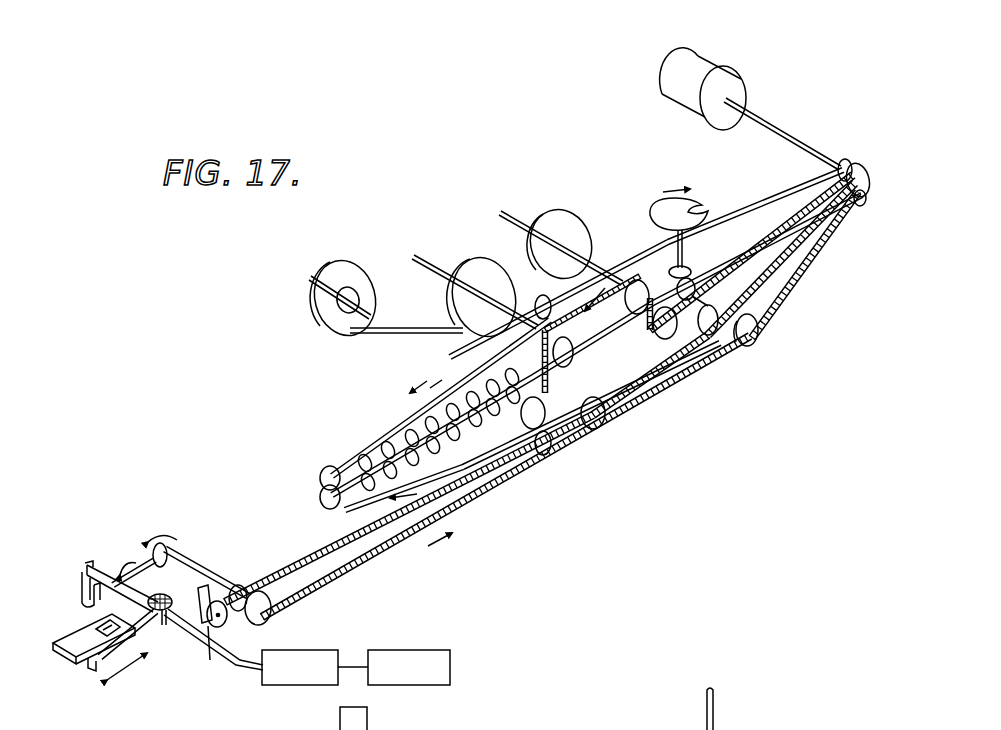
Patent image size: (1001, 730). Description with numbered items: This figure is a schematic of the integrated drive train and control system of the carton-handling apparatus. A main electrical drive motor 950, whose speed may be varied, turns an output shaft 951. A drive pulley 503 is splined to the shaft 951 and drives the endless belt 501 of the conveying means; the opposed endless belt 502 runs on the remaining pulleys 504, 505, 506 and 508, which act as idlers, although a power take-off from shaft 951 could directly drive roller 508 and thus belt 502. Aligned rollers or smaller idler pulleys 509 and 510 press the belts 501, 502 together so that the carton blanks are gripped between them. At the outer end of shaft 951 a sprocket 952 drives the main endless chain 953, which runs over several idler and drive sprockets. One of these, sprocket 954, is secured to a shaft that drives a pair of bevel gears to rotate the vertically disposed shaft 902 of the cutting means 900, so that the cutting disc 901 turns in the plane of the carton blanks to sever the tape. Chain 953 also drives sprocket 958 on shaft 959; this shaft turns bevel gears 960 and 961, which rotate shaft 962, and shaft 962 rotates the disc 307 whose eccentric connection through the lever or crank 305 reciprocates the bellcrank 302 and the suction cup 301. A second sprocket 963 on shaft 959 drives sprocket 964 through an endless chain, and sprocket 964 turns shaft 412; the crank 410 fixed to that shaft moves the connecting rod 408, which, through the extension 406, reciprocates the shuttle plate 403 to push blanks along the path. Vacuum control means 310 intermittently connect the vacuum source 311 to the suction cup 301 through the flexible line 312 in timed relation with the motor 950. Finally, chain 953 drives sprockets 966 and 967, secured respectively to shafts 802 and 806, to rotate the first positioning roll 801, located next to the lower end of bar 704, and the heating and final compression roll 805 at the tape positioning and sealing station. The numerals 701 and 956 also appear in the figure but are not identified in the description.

The main electrical drive motor 950 is at (700, 55).
The output shaft 951 is at (760, 126).
The drive pulley 503 is at (838, 165).
The sprocket 952 is at (864, 172).
The pulley 508 is at (864, 200).
The endless belt 501 is at (758, 200).
The idler pulleys 509 is at (510, 380).
The shaft 802 is at (538, 348).
The pulley 504 is at (529, 251).
The first positioning roll 801 is at (484, 283).
The heating and final compression roll 805 is at (568, 232).
The shaft 806 is at (598, 333).
The disc 701 is at (325, 300).
The bar 704 is at (365, 336).
The idler pulleys 510 is at (440, 440).
The pulley 505 is at (325, 476).
The pulley 506 is at (322, 500).
The endless belt 502 is at (378, 507).
The main drive chain 953 is at (548, 462).
The sprocket 958 is at (282, 612).
The sprocket 963 is at (240, 590).
The sprocket 964 is at (215, 622).
The shaft 959 is at (195, 562).
The bevel gear 960 is at (164, 535).
The bevel gear 961 is at (170, 545).
The shaft 962 is at (116, 575).
The bellcrank 302 is at (105, 580).
The lever 305 is at (83, 582).
The disc 307 is at (88, 603).
The crank 410 is at (198, 590).
The suction cup 301 is at (166, 614).
The shaft 412 is at (218, 620).
The reciprocal plate 403 is at (75, 648).
The extension 406 is at (94, 672).
The connecting rod 408 is at (157, 645).
The flexible line 312 is at (243, 670).
The control means 310 is at (315, 667).
The vacuum source 311 is at (409, 667).
The cutting means 900 is at (560, 722).
The cutting disc 901 is at (660, 210).
The shaft 902 is at (684, 252).
The sprocket 966 is at (572, 356).
The sprocket 967 is at (636, 315).
The roller 956 is at (714, 335).
The sprocket 954 is at (747, 346).